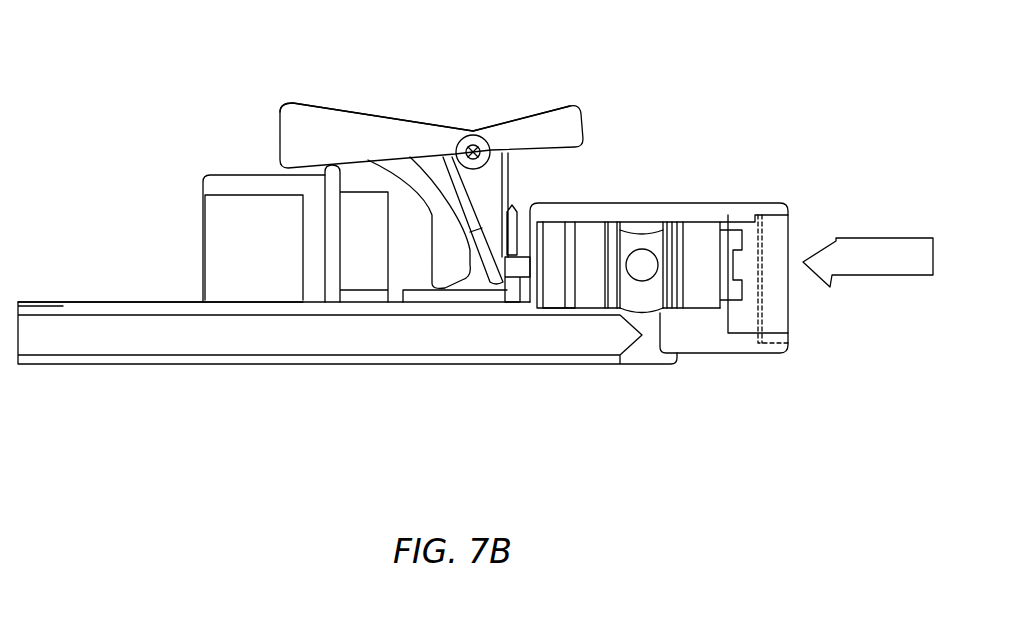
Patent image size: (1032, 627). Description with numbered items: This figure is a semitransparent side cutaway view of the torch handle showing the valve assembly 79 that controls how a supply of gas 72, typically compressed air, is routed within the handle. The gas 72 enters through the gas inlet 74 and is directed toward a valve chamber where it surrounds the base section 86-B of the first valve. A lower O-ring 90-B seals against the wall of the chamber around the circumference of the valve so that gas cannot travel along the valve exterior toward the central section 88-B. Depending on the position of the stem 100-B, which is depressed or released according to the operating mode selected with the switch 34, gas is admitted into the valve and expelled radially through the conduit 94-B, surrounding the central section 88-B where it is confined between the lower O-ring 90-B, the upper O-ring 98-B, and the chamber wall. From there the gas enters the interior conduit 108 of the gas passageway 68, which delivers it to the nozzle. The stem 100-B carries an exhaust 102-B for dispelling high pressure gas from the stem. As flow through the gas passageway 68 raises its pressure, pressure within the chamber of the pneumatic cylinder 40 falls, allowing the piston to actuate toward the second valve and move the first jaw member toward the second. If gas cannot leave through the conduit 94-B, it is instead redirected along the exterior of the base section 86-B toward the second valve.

The interior conduit 108 is at (91, 333).
The gas passageway 68 is at (145, 300).
The pneumatic cylinder 40 is at (230, 170).
The switch 34 is at (298, 103).
The valve assembly 79 is at (504, 106).
The stem 100-B is at (508, 280).
The exhaust 102-B is at (515, 278).
The gas inlet 74 is at (762, 203).
The upper O-ring 98-B is at (612, 228).
The central section 88-B is at (641, 236).
The conduit 94-B is at (645, 283).
The lower O-ring 90-B is at (670, 228).
The base section 86-B is at (702, 293).
The supply of gas 72 is at (875, 283).